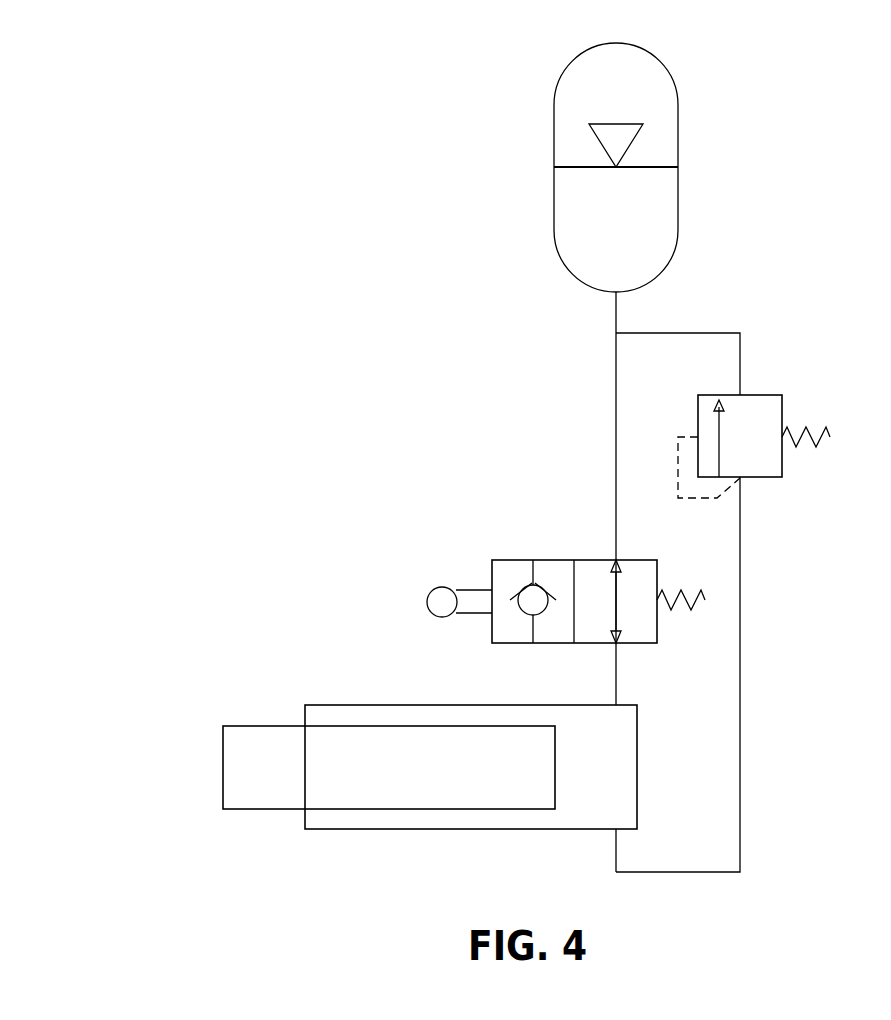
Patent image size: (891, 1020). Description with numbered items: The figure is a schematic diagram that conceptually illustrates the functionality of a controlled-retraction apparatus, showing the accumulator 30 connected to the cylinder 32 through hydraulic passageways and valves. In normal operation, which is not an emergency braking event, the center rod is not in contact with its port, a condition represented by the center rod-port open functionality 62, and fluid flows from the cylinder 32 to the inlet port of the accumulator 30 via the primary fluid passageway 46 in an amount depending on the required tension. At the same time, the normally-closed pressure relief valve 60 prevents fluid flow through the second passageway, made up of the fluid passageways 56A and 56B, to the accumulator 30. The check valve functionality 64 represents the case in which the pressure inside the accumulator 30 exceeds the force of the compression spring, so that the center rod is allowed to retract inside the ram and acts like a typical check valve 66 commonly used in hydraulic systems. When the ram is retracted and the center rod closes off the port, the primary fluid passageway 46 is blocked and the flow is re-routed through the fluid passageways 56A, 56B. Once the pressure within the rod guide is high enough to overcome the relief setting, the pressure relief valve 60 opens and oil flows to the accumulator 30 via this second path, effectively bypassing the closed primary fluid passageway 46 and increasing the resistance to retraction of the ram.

The accumulator 30 is at (553, 175).
The cylinder 32 is at (262, 725).
The fluid passageway 46 is at (616, 415).
The fluid passageway 56A is at (740, 635).
The fluid passageway 56B is at (680, 333).
The pressure relief valve 60 is at (752, 395).
The center rod-port open functionality 62 is at (597, 560).
The check valve functionality 64 is at (512, 560).
The check valve 66 is at (527, 589).